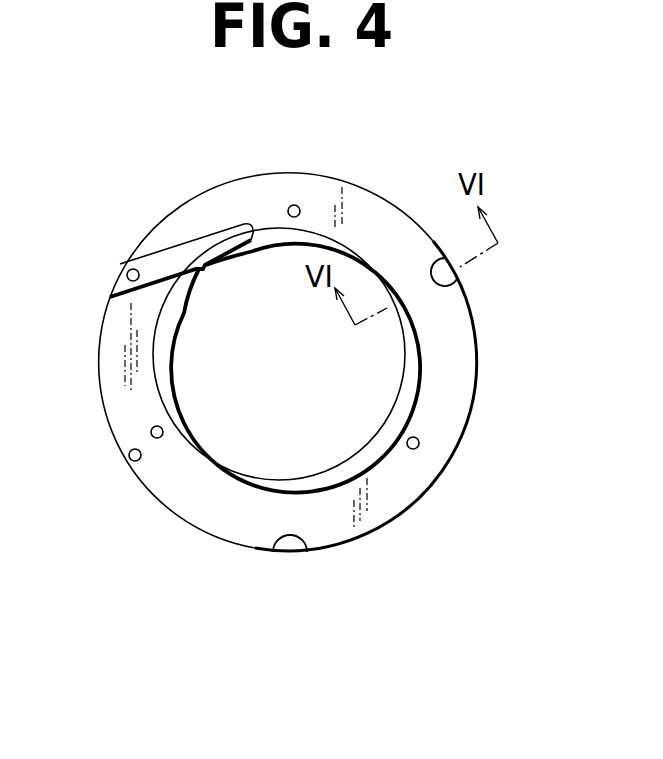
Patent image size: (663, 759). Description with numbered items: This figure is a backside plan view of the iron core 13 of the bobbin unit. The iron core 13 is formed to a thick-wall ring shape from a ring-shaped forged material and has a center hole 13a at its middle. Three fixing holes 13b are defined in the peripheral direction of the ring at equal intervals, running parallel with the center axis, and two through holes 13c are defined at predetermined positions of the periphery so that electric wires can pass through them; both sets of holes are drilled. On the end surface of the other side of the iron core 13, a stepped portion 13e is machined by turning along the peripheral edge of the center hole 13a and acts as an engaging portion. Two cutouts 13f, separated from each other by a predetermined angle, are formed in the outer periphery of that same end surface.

The iron core 13 is at (358, 185).
The center hole 13a is at (172, 380).
The fixing holes 13b is at (294, 205).
The through holes 13c is at (128, 270).
The stepped portion 13e is at (220, 465).
The cutouts 13f is at (448, 285).